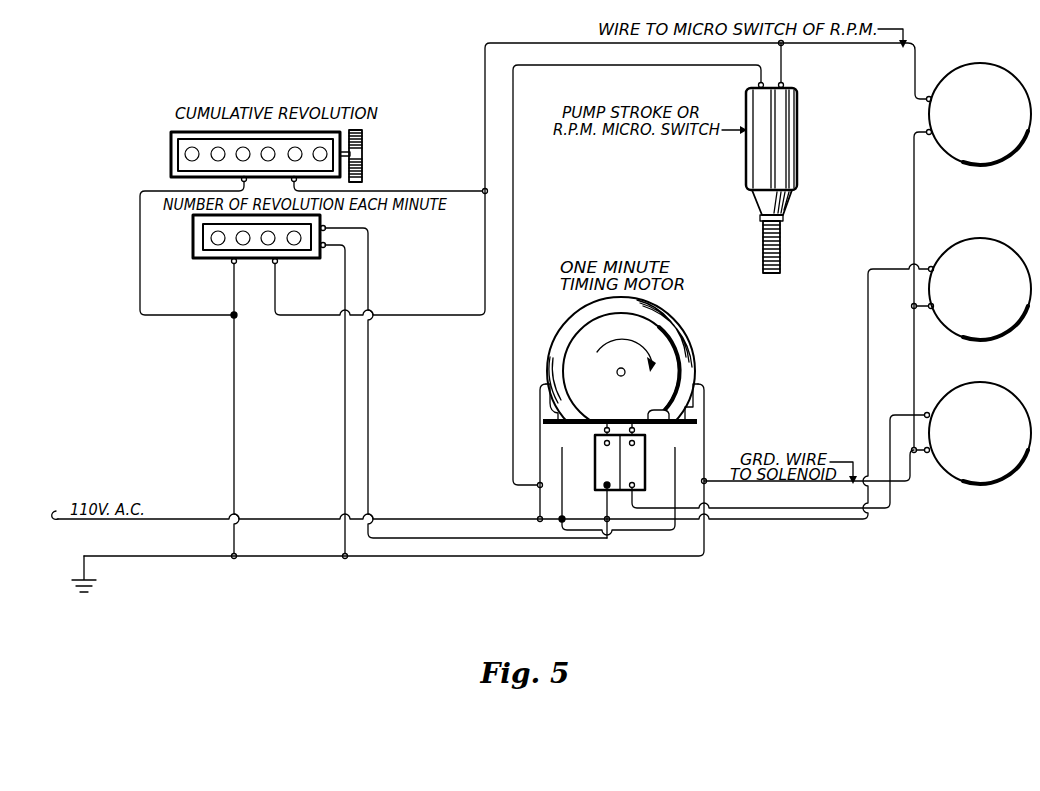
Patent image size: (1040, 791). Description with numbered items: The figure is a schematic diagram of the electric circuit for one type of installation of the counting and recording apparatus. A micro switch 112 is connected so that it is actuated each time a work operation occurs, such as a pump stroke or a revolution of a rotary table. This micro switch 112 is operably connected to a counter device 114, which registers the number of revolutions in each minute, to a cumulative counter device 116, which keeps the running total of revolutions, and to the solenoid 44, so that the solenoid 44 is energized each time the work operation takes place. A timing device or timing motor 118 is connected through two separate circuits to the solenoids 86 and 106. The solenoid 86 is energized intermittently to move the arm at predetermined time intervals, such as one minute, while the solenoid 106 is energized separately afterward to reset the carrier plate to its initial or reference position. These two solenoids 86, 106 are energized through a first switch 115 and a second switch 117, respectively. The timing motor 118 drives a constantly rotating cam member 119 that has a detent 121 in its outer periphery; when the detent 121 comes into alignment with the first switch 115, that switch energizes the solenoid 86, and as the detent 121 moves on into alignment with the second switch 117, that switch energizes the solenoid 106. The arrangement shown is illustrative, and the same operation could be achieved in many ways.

The cumulative counter device 116 is at (178, 160).
The counter device 114 is at (207, 252).
The micro switch 112 is at (783, 155).
The solenoid 44 is at (992, 82).
The solenoid 106 is at (968, 246).
The solenoid 86 is at (978, 390).
The timing motor 118 is at (580, 322).
The cam member 119 is at (652, 337).
The detent 121 is at (668, 425).
The second switch 117 is at (602, 469).
The first switch 115 is at (637, 488).